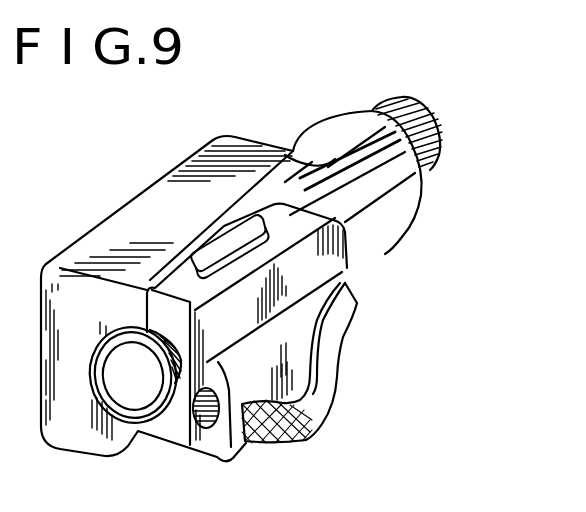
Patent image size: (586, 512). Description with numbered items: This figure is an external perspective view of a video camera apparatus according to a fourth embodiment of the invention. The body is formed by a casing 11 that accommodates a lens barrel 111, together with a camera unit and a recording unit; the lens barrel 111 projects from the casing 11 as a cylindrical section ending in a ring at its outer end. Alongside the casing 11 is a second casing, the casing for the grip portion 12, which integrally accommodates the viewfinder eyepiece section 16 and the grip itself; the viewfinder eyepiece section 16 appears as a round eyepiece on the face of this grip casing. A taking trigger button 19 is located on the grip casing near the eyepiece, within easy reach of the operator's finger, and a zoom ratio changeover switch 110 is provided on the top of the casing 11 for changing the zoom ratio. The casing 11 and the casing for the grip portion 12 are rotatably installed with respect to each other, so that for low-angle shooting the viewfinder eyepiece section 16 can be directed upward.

The casing 11 is at (393, 223).
The lens barrel 111 is at (423, 177).
The casing for the grip portion 12 is at (293, 337).
The viewfinder eyepiece section 16 is at (127, 418).
The taking trigger button 19 is at (207, 433).
The zoom ratio changeover switch 110 is at (230, 233).